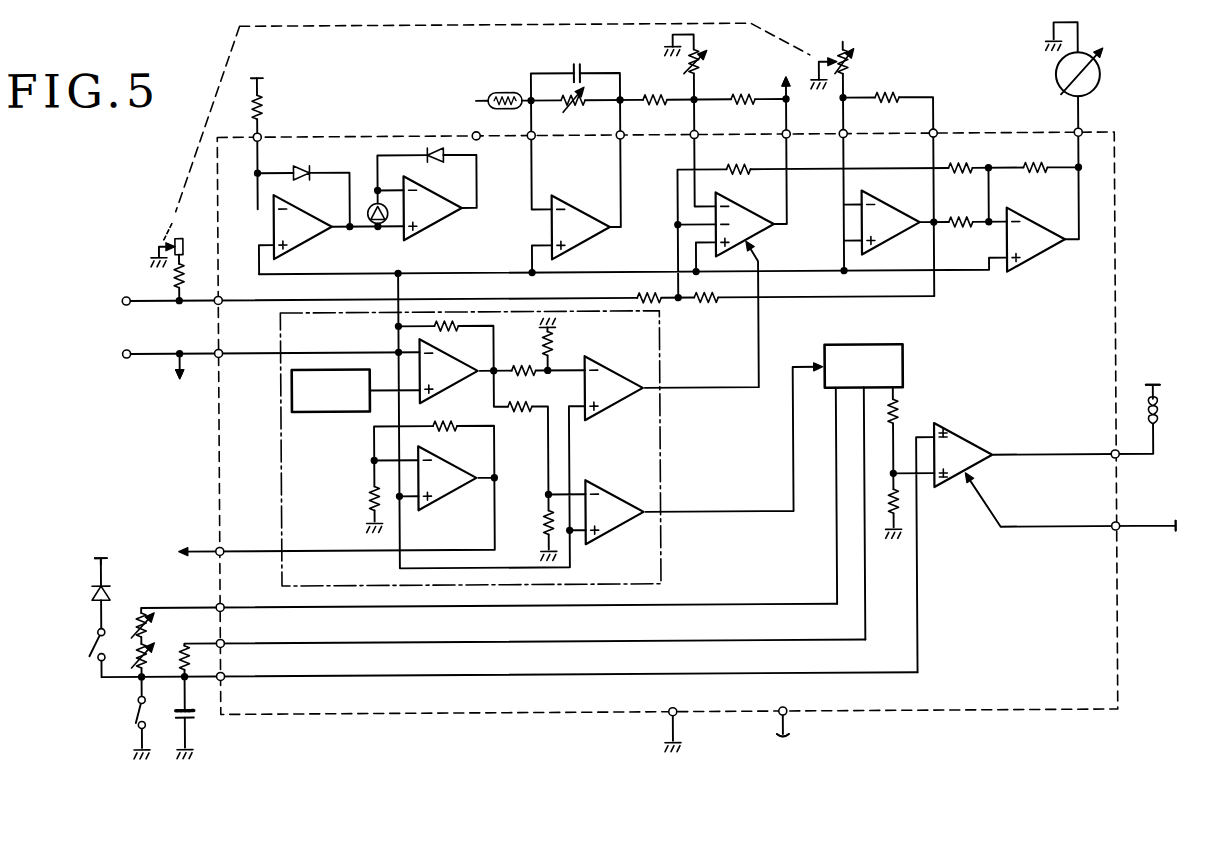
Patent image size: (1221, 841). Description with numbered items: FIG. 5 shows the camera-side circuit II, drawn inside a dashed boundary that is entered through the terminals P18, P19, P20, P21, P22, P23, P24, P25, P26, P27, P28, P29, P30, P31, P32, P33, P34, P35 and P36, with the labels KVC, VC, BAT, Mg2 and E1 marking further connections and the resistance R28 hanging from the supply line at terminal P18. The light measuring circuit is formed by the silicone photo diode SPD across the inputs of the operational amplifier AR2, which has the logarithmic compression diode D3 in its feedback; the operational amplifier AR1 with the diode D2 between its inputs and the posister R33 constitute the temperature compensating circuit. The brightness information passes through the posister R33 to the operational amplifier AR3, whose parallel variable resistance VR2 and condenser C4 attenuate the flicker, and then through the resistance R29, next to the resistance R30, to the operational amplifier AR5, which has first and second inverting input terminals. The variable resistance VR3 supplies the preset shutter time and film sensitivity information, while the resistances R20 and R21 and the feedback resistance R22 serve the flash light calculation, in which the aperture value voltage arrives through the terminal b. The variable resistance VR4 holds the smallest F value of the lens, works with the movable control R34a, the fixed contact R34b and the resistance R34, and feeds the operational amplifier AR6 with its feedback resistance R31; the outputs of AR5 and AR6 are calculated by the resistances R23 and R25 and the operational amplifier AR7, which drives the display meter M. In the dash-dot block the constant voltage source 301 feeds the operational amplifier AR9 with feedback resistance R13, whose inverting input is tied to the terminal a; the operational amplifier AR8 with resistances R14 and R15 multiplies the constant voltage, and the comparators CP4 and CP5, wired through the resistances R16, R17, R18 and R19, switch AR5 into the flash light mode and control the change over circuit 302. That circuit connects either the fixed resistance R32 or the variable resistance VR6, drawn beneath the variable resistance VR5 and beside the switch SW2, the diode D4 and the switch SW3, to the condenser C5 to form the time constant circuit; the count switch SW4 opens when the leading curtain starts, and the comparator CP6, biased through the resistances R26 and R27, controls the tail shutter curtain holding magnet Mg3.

The constant voltage supply terminal KVC is at (210, 310).
The resistor R28 is at (266, 108).
The terminal P18 is at (271, 146).
The diode D2 is at (303, 163).
The operational amplifier AR1 is at (303, 227).
The silicone photo diode SPD is at (372, 228).
The logarithmic compression diode D3 is at (437, 164).
The operational amplifier AR2 is at (433, 208).
The terminal P19 is at (490, 145).
The posister R33 is at (507, 90).
The terminal P20 is at (545, 144).
The condenser C4 is at (584, 61).
The variable resistance VR2 is at (580, 108).
The terminal P21 is at (634, 144).
The operational amplifier AR3 is at (581, 227).
The resistance R29 is at (657, 94).
The variable resistance VR3 is at (708, 68).
The terminal P22 is at (708, 143).
The resistor R30 is at (745, 108).
The terminal P23 is at (800, 143).
The feedback resistance R22 is at (740, 161).
The operational amplifier AR5 is at (745, 224).
The resistance R20 is at (651, 292).
The resistance R21 is at (707, 304).
The variable resistance VR4 is at (853, 65).
The terminal P24 is at (857, 142).
The resistance R31 is at (889, 106).
The terminal P25 is at (947, 142).
The operational amplifier AR6 is at (891, 222).
The resistance R23 is at (962, 177).
The resistance R25 is at (1036, 176).
The resistance R26 is at (932, 320).
The operational amplifier AR7 is at (1036, 239).
The terminal P26 is at (1092, 141).
The display meter M is at (1102, 80).
The circuit II is at (1116, 245).
The movable control R34a is at (188, 227).
The fixed contact R34b is at (185, 245).
The resistance R34 is at (194, 275).
The terminal b is at (118, 302).
The terminal a is at (119, 355).
The reference voltage VC is at (180, 386).
The terminal P35 is at (232, 309).
The terminal P34 is at (233, 362).
The terminal P33 is at (234, 560).
The terminal P32 is at (234, 616).
The terminal P31 is at (234, 652).
The terminal P30 is at (235, 685).
The constant voltage source 301 is at (331, 391).
The operational amplifier AR9 is at (449, 371).
The feedback resistance R13 is at (450, 330).
The resistor R16 is at (524, 364).
The resistor R17 is at (555, 343).
The resistor R18 is at (522, 412).
The comparator CP4 is at (614, 388).
The change over circuit 302 is at (864, 365).
The resistance R15 is at (447, 430).
The operational amplifier AR8 is at (447, 478).
The resistance R14 is at (364, 509).
The resistor R19 is at (541, 522).
The comparator CP5 is at (614, 512).
The resistance R27 is at (884, 513).
The comparator CP6 is at (963, 455).
The terminal P27 is at (1106, 465).
The terminal P28 is at (1107, 536).
The tail shutter curtain holding magnet Mg3 is at (1169, 411).
The battery BAT is at (1154, 375).
The magnet Mg2 is at (1193, 528).
The switch SW2 is at (103, 550).
The diode D4 is at (91, 594).
The switch SW3 is at (85, 647).
The variable resistor VR5 is at (135, 609).
The variable resistance VR6 is at (155, 657).
The fixed resistance R32 is at (188, 655).
The count switch SW4 is at (133, 713).
The condenser C5 is at (186, 720).
The terminal P29 is at (675, 721).
The terminal P36 is at (785, 702).
The power source E1 is at (785, 746).